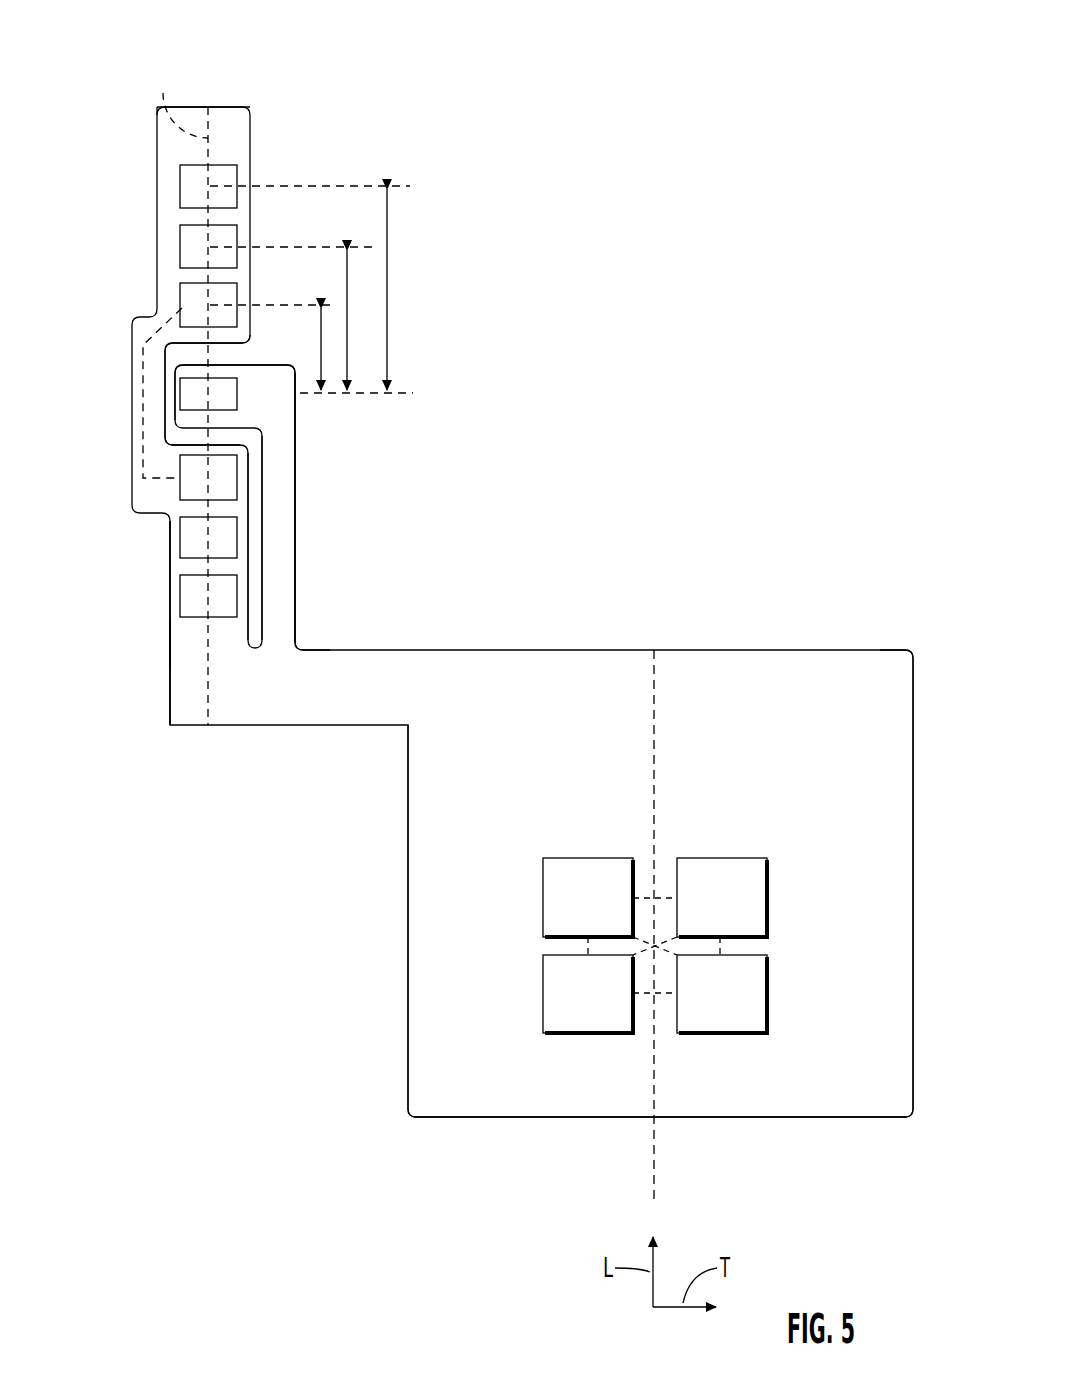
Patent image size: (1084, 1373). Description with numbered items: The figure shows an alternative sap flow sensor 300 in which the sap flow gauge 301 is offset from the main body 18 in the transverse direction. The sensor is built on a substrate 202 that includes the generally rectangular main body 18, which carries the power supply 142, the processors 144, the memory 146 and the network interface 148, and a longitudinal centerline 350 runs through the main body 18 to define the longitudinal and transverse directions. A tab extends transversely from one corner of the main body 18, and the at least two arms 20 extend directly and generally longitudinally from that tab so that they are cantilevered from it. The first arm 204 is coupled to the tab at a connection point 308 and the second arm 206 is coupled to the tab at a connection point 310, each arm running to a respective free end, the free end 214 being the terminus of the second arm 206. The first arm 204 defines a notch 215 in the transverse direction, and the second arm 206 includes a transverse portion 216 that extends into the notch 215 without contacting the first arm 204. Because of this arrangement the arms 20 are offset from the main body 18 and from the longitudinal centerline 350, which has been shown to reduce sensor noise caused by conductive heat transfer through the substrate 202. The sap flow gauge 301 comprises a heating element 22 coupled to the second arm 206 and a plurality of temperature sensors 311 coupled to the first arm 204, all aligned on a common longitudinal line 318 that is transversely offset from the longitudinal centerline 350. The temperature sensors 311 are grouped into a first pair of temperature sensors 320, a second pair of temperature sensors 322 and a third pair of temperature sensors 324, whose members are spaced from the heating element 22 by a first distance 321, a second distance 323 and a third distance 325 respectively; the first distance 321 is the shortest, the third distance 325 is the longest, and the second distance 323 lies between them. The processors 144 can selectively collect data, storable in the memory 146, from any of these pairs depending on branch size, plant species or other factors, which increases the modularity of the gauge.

The main body 18 is at (893, 843).
The arms 20 is at (293, 538).
The heating element 22 is at (185, 403).
The power supply 142 is at (739, 1011).
The processors 144 is at (739, 916).
The memory 146 is at (605, 916).
The network interface 148 is at (605, 1011).
The substrate 202 is at (902, 700).
The first arm 204 is at (177, 565).
The second arm 206 is at (333, 516).
The free end 214 is at (207, 370).
The transverse portion 216 is at (188, 378).
The notch 215 is at (162, 433).
The sap flow sensor 300 is at (768, 193).
The sap flow gauge 301 is at (400, 63).
The connection point 308 is at (172, 647).
The connection point 310 is at (297, 643).
The plurality of temperature sensors 311 is at (305, 120).
The common longitudinal line 318 is at (179, 100).
The first pair of temperature sensors 320 is at (185, 292).
The first distance 321 is at (319, 349).
The second pair of temperature sensors 322 is at (185, 236).
The second distance 323 is at (346, 320).
The third pair of temperature sensors 324 is at (185, 184).
The third distance 325 is at (388, 289).
The longitudinal centerline 350 is at (656, 1150).